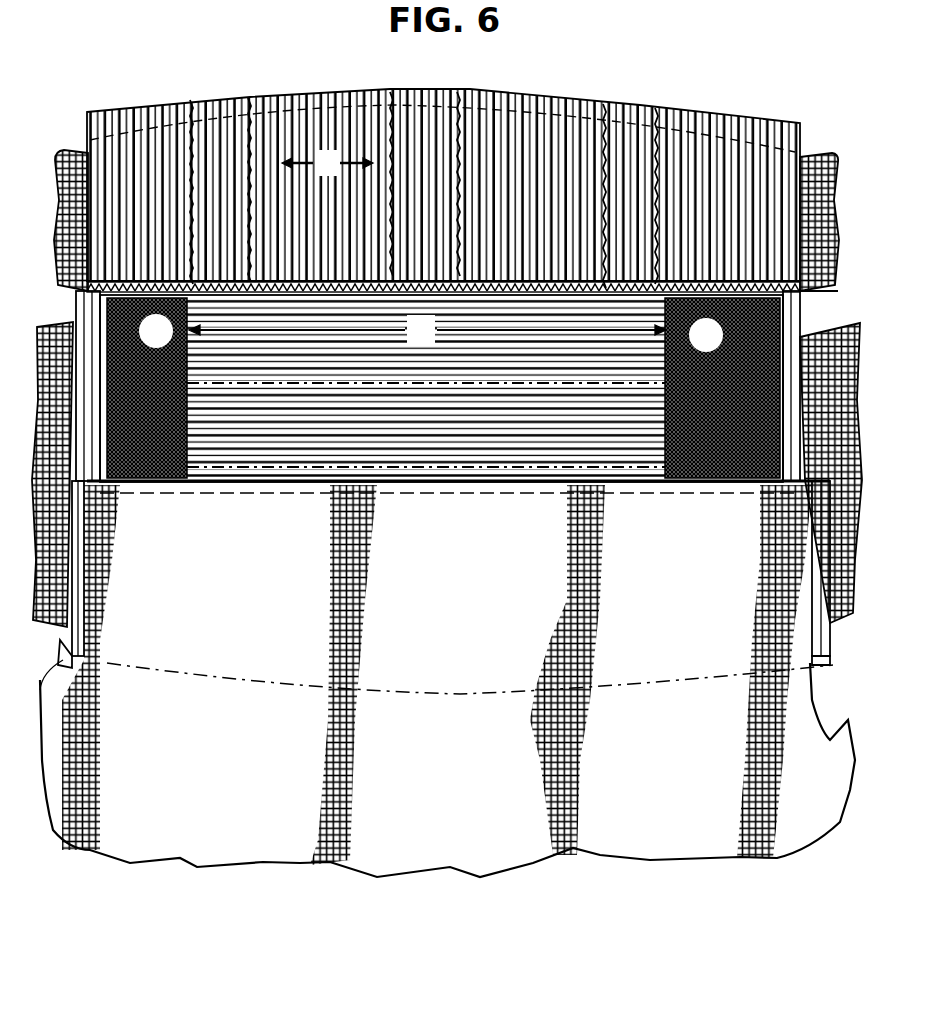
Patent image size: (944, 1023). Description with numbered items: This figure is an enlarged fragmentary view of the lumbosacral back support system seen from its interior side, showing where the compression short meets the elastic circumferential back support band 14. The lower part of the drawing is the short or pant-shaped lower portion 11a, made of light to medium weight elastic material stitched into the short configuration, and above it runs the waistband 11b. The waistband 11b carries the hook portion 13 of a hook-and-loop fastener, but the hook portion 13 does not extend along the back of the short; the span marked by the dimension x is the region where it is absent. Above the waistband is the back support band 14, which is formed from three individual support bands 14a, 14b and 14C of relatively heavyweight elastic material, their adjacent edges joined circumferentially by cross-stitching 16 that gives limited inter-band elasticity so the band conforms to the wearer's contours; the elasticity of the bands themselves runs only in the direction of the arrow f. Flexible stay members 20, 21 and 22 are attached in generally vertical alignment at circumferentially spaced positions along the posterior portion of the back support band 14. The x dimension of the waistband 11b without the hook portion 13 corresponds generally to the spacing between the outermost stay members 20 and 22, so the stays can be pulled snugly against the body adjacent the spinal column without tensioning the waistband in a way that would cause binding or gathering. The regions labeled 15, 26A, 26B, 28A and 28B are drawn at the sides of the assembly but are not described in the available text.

The lower portion 11a is at (378, 846).
The waistband 11b is at (263, 445).
The hook portion 13 is at (183, 478).
The back support band 14 is at (753, 128).
The individual support band 14a is at (157, 138).
The individual support band 14b is at (98, 285).
The individual support band 14C is at (73, 637).
The adhesive region 15 is at (728, 491).
The cross-stitching 16 is at (836, 289).
The flexible stay member 20 is at (629, 109).
The flexible stay member 21 is at (437, 98).
The flexible stay member 22 is at (214, 112).
The upper left side flap 26A is at (64, 150).
The lower left side flap 26B is at (73, 560).
The upper right side flap 28A is at (820, 167).
The lower right side flap 28B is at (838, 615).